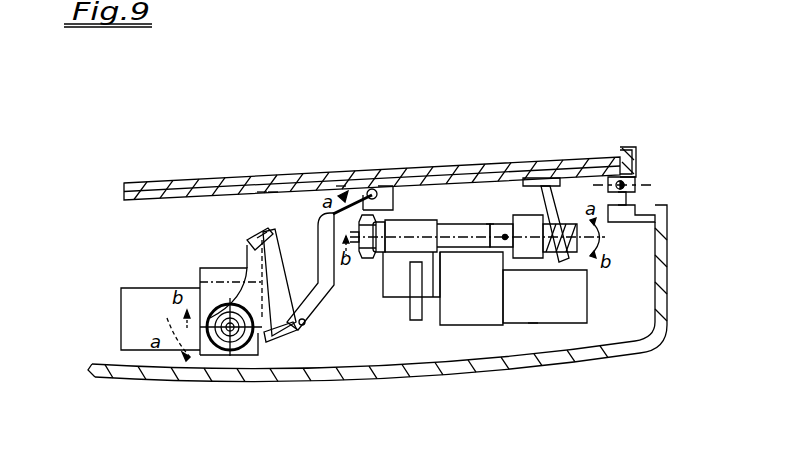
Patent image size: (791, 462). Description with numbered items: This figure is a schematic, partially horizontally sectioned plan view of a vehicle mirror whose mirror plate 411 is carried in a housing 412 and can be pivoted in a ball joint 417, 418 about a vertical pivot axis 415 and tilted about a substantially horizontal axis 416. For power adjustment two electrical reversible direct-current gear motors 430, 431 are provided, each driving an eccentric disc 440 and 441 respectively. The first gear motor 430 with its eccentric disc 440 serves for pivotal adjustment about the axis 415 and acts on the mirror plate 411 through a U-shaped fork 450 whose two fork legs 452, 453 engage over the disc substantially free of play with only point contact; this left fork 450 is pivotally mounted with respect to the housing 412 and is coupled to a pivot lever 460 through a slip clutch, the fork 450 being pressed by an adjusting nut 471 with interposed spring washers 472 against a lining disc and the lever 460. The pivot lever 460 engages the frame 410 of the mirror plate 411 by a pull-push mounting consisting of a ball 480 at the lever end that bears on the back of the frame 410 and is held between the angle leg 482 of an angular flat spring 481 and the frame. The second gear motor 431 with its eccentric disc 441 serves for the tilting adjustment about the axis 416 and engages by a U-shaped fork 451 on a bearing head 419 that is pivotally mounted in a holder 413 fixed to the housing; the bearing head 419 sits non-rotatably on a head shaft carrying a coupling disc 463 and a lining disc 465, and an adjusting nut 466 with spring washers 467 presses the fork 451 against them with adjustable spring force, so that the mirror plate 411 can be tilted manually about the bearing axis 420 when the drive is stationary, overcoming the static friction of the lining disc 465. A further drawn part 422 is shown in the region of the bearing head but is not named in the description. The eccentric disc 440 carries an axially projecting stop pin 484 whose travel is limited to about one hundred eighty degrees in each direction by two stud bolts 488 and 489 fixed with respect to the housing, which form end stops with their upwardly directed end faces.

The frame 410 is at (291, 174).
The mirror plate 411 is at (273, 192).
The housing 412 is at (642, 348).
The holder 413 is at (518, 234).
The vertical pivot axis 415 is at (636, 184).
The horizontal axis 416 is at (643, 186).
The ball joint 417 is at (634, 168).
The ball joint 418 is at (623, 156).
The bearing head 419 is at (566, 228).
The bearing axis 420 is at (353, 248).
The push rod 422 is at (546, 185).
The first gear motor 430 is at (140, 320).
The second gear motor 431 is at (565, 310).
The first eccentric disc 440 is at (247, 260).
The second eccentric disc 441 is at (473, 326).
The first fork 450 is at (247, 238).
The second fork 451 is at (420, 320).
The fork leg 452 is at (272, 338).
The fork leg 453 is at (263, 231).
The pivot lever 460 is at (318, 278).
The coupling disc 463 is at (503, 233).
The lining disc 465 is at (488, 224).
The adjusting nut 466 is at (372, 262).
The spring washers 467 is at (533, 328).
The adjusting nut 471 is at (236, 350).
The spring washers 472 is at (222, 345).
The ball 480 is at (348, 203).
The flat spring 481 is at (340, 186).
The angle leg 482 is at (372, 188).
The stop pin 484 is at (305, 325).
The stud bolt 488 is at (283, 341).
The stud bolt 489 is at (262, 192).